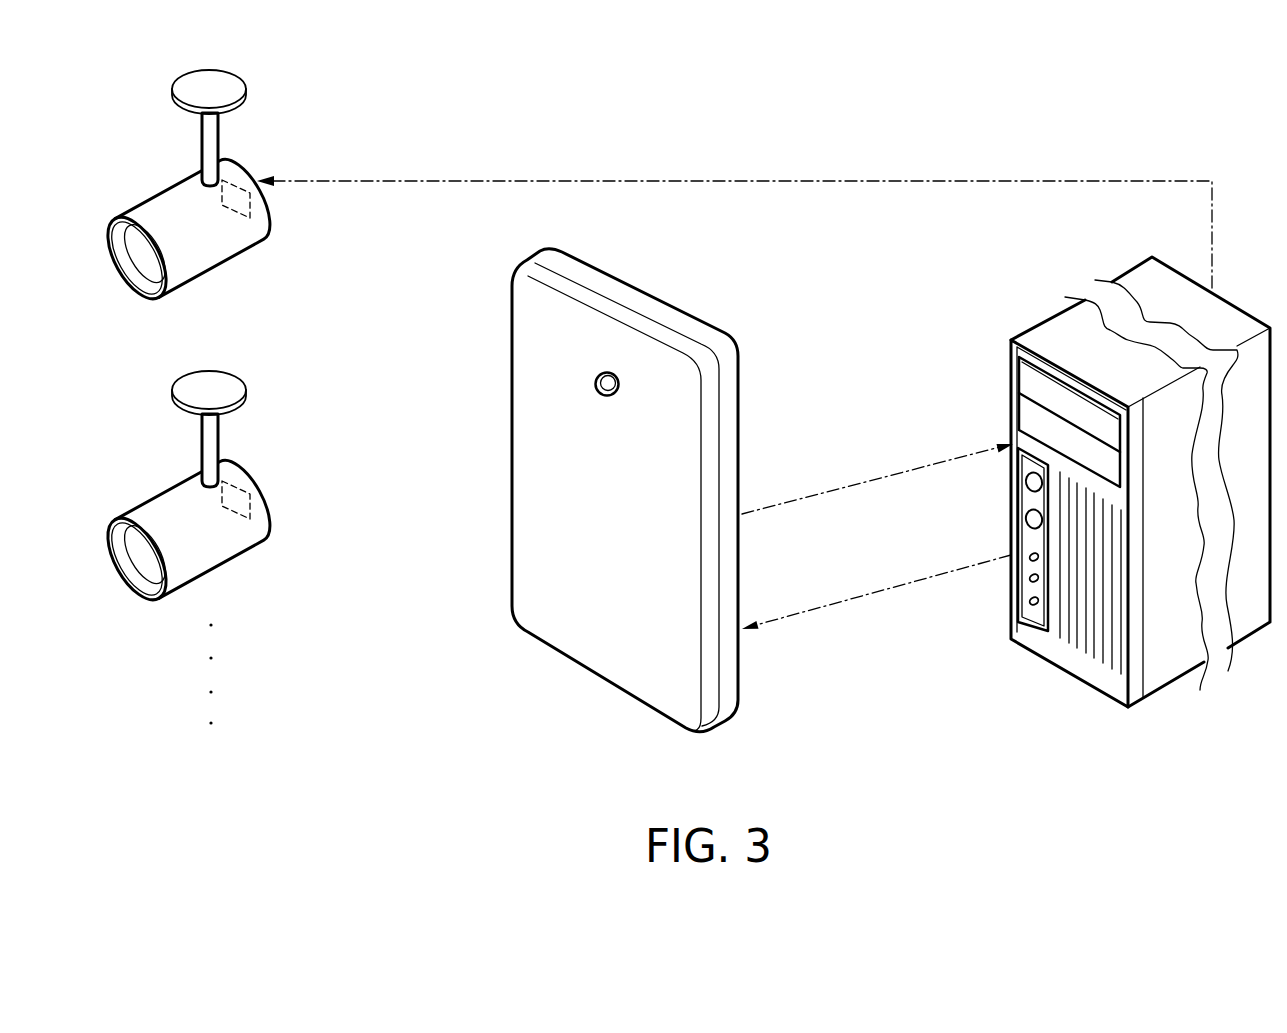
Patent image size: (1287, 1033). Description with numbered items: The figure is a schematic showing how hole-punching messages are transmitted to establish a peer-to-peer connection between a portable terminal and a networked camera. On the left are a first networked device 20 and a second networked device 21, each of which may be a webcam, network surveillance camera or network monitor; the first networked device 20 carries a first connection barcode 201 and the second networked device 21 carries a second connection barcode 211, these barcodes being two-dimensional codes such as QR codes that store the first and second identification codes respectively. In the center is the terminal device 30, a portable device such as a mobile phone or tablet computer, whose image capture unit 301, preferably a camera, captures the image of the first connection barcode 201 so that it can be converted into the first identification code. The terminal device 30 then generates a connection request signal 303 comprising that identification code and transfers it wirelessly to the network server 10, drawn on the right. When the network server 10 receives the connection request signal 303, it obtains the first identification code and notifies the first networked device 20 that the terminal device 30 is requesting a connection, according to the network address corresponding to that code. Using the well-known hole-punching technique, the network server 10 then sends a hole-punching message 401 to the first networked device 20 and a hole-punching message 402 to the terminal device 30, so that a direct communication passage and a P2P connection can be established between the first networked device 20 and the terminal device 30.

The network server 10 is at (1011, 371).
The first networked device 20 is at (153, 197).
The second networked device 21 is at (153, 498).
The first connection barcode 201 is at (252, 212).
The second connection barcode 211 is at (240, 476).
The terminal device 30 is at (678, 309).
The image capture unit 301 is at (594, 393).
The connection request signal 303 is at (828, 490).
The hole-punching message 401 is at (498, 181).
The hole-punching message 402 is at (893, 590).